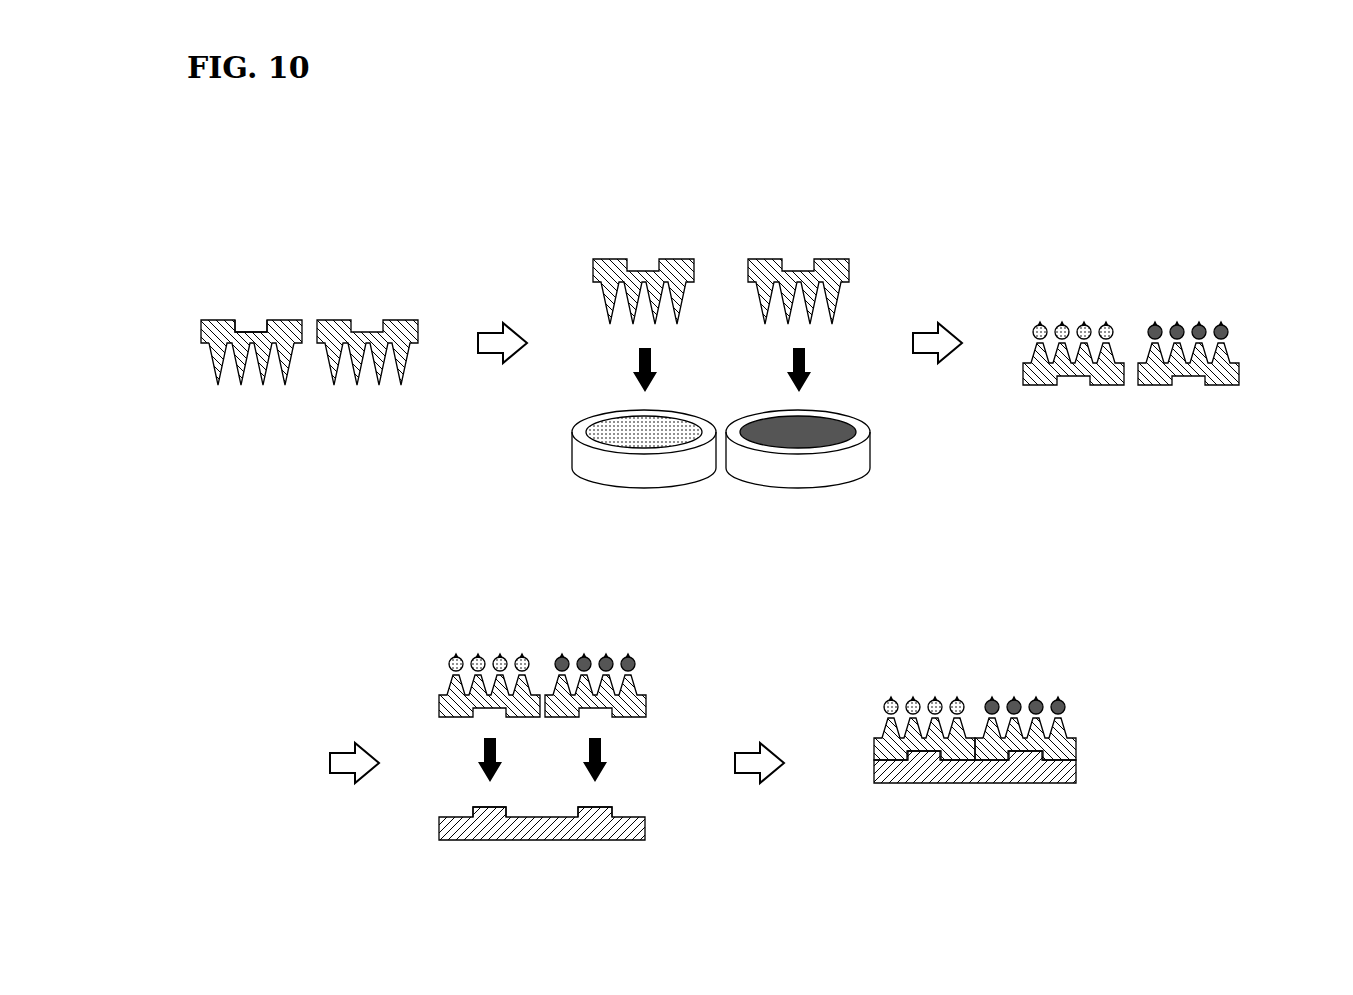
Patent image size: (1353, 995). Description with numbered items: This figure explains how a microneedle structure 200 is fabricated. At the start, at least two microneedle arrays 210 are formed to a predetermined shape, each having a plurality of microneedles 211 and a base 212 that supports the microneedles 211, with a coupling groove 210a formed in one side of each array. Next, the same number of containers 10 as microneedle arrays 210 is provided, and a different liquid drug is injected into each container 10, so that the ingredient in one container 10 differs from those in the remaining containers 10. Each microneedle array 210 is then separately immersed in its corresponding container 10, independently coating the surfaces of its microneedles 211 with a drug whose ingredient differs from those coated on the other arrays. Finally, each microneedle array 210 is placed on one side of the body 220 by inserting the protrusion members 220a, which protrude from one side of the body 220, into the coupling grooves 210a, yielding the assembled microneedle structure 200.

The container 10 is at (862, 453).
The microneedle structure 200 is at (1067, 672).
The microneedle array 210 is at (736, 485).
The coupling groove 210a is at (250, 325).
The microneedle 211 is at (262, 362).
The base 212 is at (203, 344).
The body 220 is at (582, 812).
The protrusion member 220a is at (602, 813).